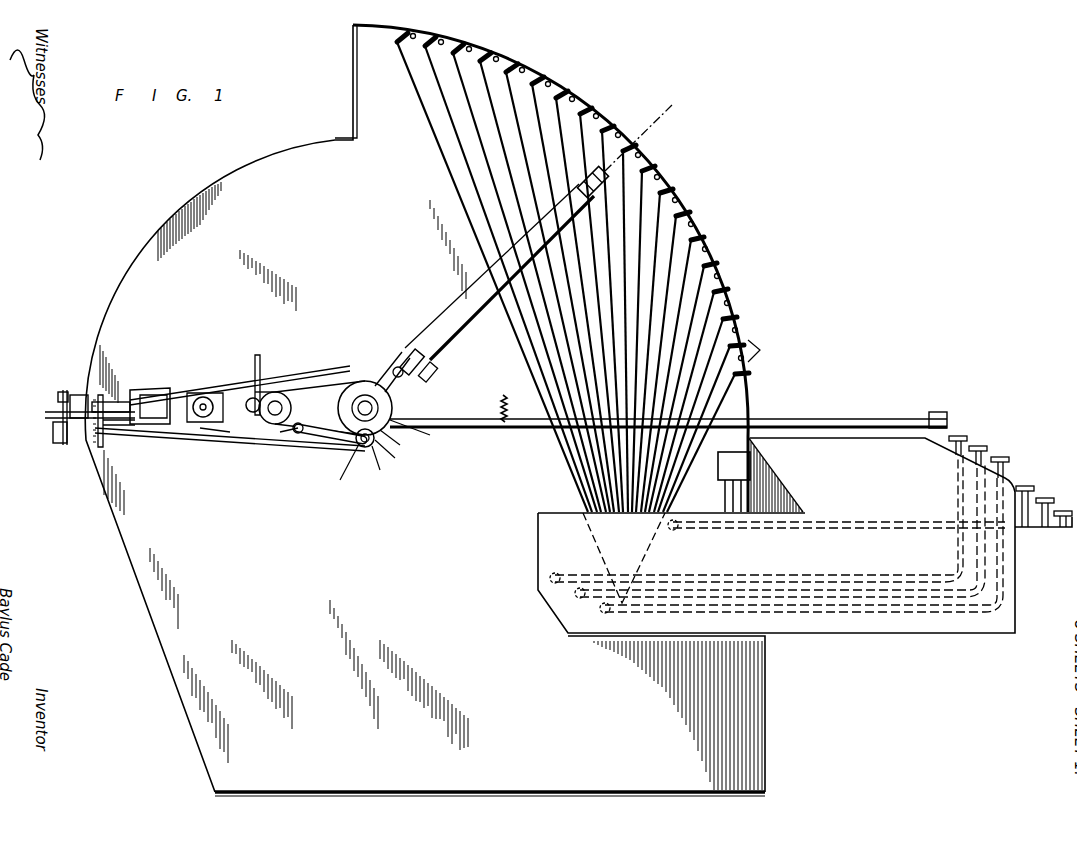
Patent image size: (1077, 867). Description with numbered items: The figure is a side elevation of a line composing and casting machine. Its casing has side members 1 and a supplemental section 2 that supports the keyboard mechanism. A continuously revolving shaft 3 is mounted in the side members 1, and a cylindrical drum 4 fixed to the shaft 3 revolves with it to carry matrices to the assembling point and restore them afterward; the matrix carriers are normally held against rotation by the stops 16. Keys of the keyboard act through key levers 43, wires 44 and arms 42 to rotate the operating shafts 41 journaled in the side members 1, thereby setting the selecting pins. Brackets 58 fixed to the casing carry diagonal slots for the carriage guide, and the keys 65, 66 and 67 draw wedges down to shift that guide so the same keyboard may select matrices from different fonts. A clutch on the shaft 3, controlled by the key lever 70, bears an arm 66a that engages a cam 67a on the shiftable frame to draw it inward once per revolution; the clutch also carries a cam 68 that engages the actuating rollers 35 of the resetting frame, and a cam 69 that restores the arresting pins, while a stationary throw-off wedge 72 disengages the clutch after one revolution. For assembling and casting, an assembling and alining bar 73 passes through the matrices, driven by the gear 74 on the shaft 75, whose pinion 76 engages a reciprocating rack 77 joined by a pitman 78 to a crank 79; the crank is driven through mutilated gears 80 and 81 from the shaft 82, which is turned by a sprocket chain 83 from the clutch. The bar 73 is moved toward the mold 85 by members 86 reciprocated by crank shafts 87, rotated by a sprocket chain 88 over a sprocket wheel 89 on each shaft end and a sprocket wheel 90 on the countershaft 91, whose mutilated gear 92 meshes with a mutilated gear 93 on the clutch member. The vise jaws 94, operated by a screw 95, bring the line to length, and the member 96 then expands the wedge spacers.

The side members 1 is at (136, 272).
The supplemental section 2 is at (1006, 637).
The continuously revolving shaft 3 is at (392, 436).
The cylindrical drum 4 is at (645, 128).
The stops 16 is at (290, 436).
The actuating rollers 35 is at (481, 408).
The operating shafts 41 is at (488, 52).
The arms 42 is at (742, 360).
The key levers 43 is at (1010, 458).
The wires 44 is at (470, 168).
The brackets 58 is at (748, 456).
The key 65 is at (1026, 486).
The key 66 is at (1047, 498).
The key 67 is at (1065, 511).
The arm 66a is at (400, 350).
The cam 67a is at (436, 366).
The cam 68 is at (372, 383).
The cam 69 is at (393, 385).
The key lever 70 is at (937, 413).
The throw-off wedge 72 is at (392, 458).
The assembling and alining bar 73 is at (108, 402).
The gear 74 is at (100, 450).
The shaft 75 is at (160, 430).
The pinion 76 is at (405, 378).
The reciprocating rack 77 is at (256, 360).
The pitman 78 is at (280, 392).
The crank 79 is at (250, 398).
The mutilated gear 80 is at (256, 436).
The mutilated gear 81 is at (312, 390).
The shaft 82 is at (275, 392).
The sprocket chain 83 is at (320, 372).
The mold 85 is at (48, 412).
The members 86 is at (148, 392).
The crank shafts 87 is at (203, 395).
The sprocket chain 88 is at (320, 438).
The sprocket wheel 89 is at (220, 438).
The sprocket wheel 90 is at (358, 446).
The countershaft 91 is at (352, 480).
The mutilated gear 92 is at (378, 470).
The mutilated gear 93 is at (400, 422).
The vise jaws 94 is at (78, 395).
The screw 95 is at (53, 430).
The member 96 is at (62, 392).